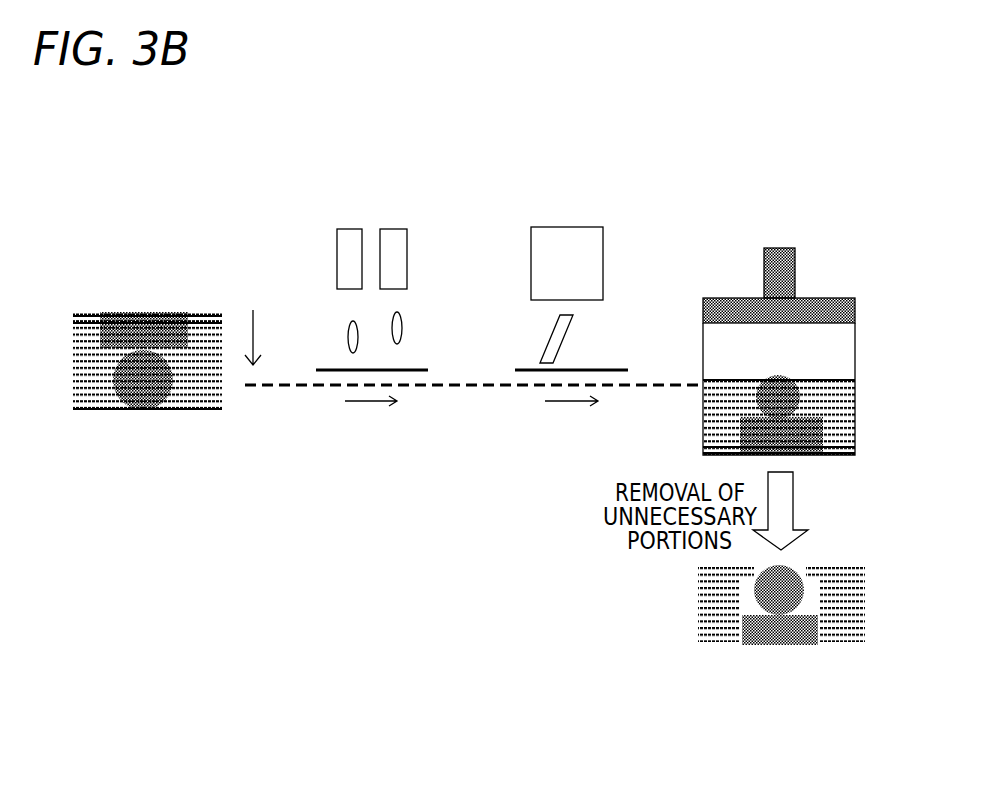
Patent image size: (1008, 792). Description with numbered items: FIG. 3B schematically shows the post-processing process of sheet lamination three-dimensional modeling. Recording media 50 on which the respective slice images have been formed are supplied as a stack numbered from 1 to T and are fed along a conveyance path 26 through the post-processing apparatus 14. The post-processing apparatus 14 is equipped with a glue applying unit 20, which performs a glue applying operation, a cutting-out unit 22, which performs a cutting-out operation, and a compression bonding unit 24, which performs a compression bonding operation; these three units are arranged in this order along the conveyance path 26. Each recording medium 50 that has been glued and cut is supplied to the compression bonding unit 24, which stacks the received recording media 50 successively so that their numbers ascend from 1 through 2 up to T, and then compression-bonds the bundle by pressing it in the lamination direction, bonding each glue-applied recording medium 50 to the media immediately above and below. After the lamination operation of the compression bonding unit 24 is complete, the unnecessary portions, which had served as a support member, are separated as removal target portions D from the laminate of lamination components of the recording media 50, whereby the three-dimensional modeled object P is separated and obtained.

The post-processing apparatus 14 is at (875, 173).
The glue applying unit 20 is at (357, 265).
The cutting-out unit 22 is at (564, 270).
The compression bonding unit 24 is at (822, 277).
The conveyance path 26 is at (322, 386).
The recording medium 50 is at (170, 300).
The first recording medium number 1 is at (75, 315).
The second recording medium number 2 is at (75, 328).
The last recording medium number T is at (77, 400).
The removal target portions D is at (710, 640).
The 3D modeled object P is at (775, 646).